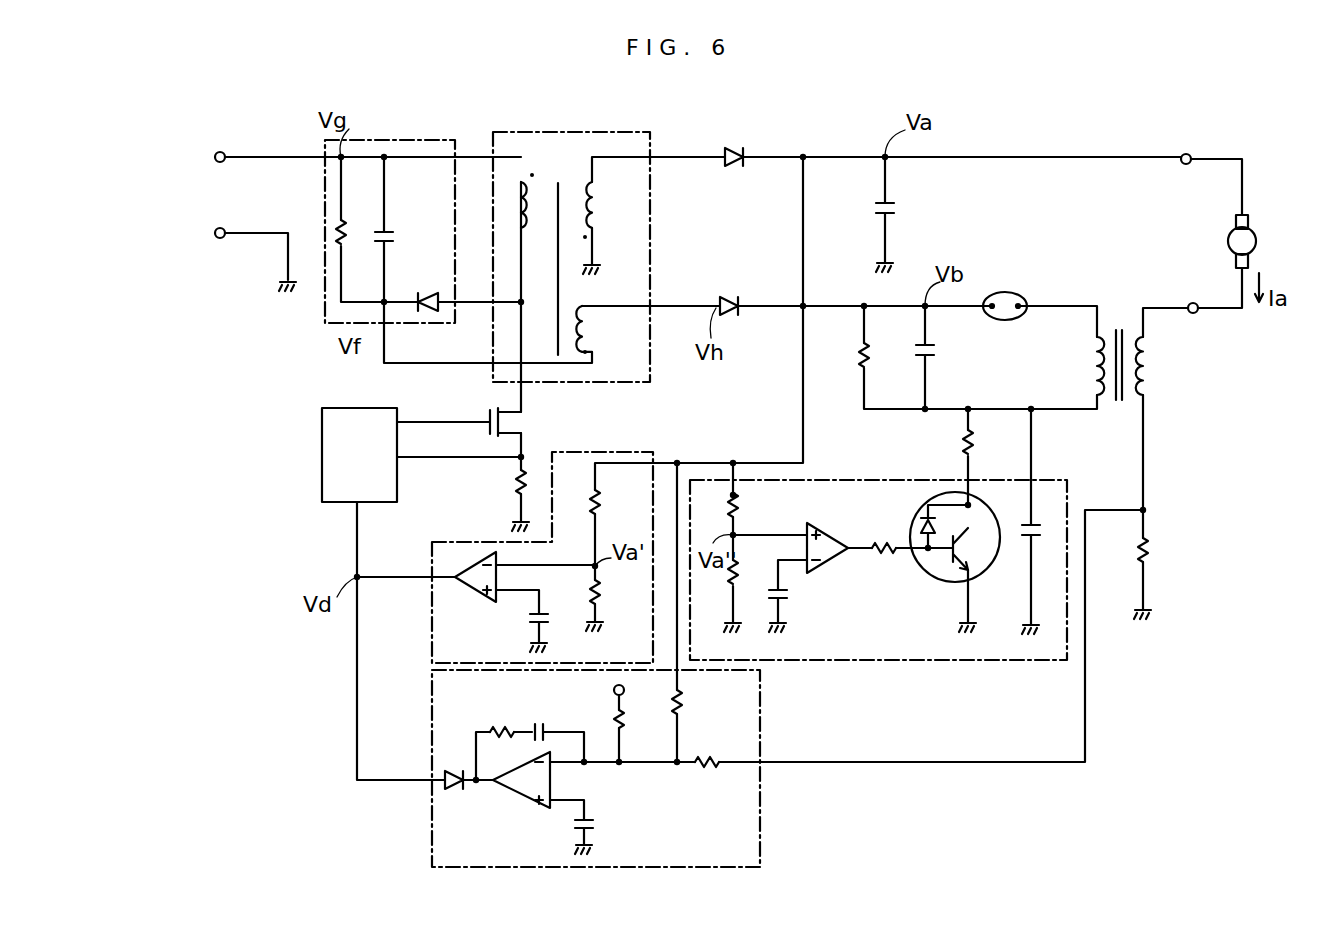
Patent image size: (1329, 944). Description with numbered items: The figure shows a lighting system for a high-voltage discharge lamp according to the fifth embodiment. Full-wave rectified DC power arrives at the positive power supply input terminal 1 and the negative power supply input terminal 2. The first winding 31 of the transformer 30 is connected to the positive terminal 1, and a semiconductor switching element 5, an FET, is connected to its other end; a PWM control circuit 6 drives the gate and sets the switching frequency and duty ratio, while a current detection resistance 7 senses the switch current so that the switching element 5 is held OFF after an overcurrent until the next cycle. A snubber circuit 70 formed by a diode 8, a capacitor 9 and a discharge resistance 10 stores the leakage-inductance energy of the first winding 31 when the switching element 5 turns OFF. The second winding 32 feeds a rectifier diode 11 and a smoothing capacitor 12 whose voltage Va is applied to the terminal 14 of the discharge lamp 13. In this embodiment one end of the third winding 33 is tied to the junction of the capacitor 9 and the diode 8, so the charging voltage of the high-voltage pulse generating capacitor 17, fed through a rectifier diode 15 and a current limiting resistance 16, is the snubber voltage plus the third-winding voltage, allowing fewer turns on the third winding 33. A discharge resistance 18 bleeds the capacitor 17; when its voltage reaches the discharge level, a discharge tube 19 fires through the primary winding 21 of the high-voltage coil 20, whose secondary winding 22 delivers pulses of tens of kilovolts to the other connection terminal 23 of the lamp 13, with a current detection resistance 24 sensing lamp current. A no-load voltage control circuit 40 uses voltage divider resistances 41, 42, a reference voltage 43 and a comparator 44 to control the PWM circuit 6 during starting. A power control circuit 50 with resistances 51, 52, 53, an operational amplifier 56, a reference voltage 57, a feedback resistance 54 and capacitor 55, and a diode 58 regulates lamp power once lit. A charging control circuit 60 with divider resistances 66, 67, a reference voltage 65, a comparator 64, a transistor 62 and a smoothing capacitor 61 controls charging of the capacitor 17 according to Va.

The positive power supply input terminal 1 is at (217, 148).
The negative power supply input terminal 2 is at (217, 226).
The semiconductor switching element 5 is at (525, 425).
The PWM control circuit 6 is at (322, 490).
The current detection resistance 7 is at (515, 482).
The diode 8 is at (432, 312).
The capacitor 9 is at (393, 238).
The discharge resistance 10 is at (346, 238).
The rectifier diode 11 is at (735, 150).
The smoothing capacitor 12 is at (894, 210).
The discharge lamp 13 is at (1256, 242).
The terminal 14 is at (1186, 153).
The rectifier diode 15 is at (730, 300).
The current limiting resistance 16 is at (962, 443).
The high-voltage pulse generating capacitor 17 is at (934, 352).
The discharge resistance 18 is at (858, 355).
The discharge tube 19 is at (1005, 292).
The high-voltage coil 20 is at (1120, 322).
The primary winding 21 is at (1092, 362).
The secondary winding 22 is at (1150, 366).
The connection terminal 23 is at (1197, 313).
The current detection resistance 24 is at (1148, 548).
The transformer 30 is at (604, 132).
The first winding 31 is at (511, 204).
The second winding 32 is at (590, 206).
The third winding 33 is at (582, 328).
The no-load voltage control circuit 40 is at (618, 452).
The voltage divider resistance 41 is at (600, 500).
The voltage divider resistance 42 is at (600, 595).
The reference voltage 43 is at (533, 628).
The comparator 44 is at (470, 590).
The power control circuit 50 is at (760, 690).
The resistance 51 is at (684, 700).
The resistance 52 is at (624, 730).
The resistance 53 is at (702, 768).
The resistance 54 is at (498, 724).
The capacitor 55 is at (540, 722).
The operational amplifier 56 is at (512, 798).
The reference voltage 57 is at (594, 826).
The diode 58 is at (460, 790).
The charging control circuit 60 is at (918, 660).
The capacitor 61 is at (1025, 548).
The transistor 62 is at (905, 552).
The comparator 64 is at (830, 535).
The reference voltage 65 is at (790, 598).
The voltage divider resistance 66 is at (740, 500).
The voltage divider resistance 67 is at (740, 582).
The snubber circuit 70 is at (455, 150).